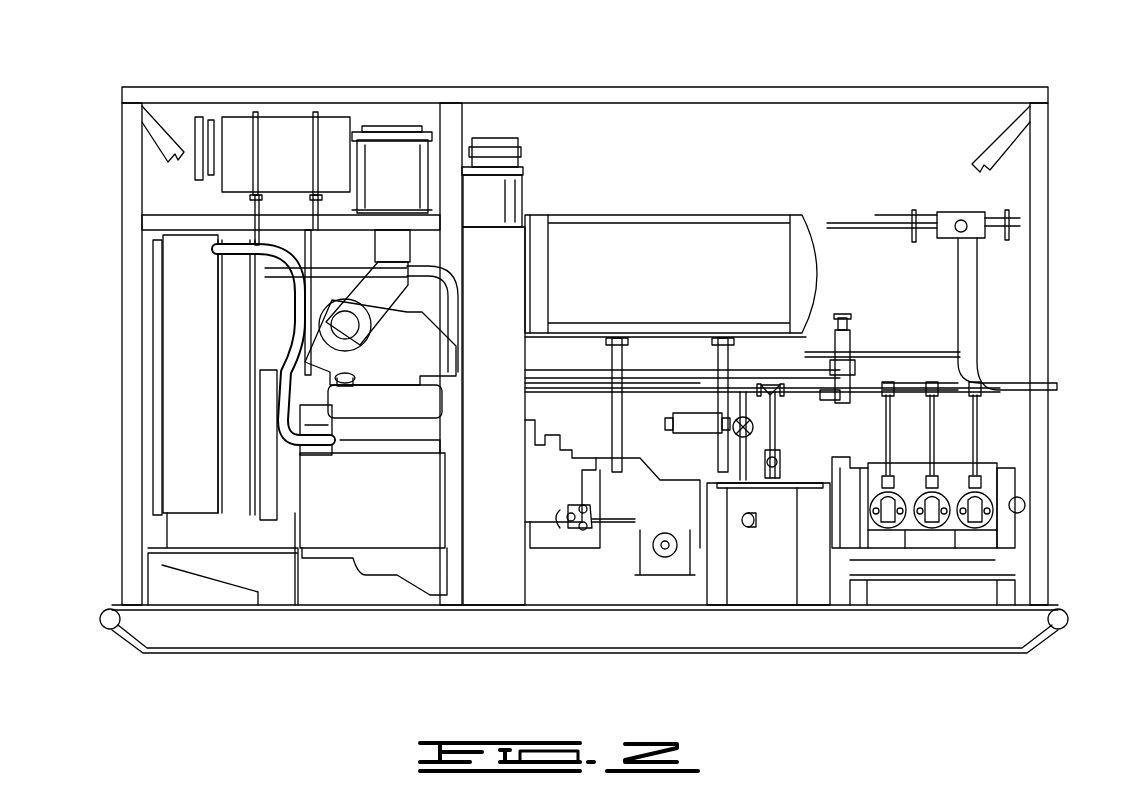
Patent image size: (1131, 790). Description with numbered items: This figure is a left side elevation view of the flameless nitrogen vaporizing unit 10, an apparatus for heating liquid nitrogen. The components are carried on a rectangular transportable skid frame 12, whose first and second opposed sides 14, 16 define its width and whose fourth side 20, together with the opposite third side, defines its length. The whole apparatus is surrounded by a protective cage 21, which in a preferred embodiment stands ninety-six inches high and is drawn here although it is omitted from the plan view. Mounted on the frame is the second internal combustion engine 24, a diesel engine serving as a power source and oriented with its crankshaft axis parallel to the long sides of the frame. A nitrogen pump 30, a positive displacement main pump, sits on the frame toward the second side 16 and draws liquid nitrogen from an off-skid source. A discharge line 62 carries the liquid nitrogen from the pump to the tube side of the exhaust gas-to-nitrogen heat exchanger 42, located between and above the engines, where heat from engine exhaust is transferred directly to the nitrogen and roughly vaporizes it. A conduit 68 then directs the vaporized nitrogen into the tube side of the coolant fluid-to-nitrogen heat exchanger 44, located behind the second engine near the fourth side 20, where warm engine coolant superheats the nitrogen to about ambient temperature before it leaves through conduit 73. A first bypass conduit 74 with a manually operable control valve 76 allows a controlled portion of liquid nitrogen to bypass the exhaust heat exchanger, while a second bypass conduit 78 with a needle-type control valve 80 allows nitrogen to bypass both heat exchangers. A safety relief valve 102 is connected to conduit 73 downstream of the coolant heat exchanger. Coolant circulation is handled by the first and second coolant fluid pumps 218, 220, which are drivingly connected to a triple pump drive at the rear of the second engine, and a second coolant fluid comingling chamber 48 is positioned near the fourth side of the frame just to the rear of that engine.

The flameless nitrogen vaporizing unit 10 is at (1062, 62).
The skid frame 12 is at (449, 634).
The first side 14 is at (100, 612).
The second side 16 is at (1070, 613).
The fourth side 20 is at (355, 637).
The protective cage 21 is at (112, 286).
The second internal combustion engine 24 is at (340, 545).
The nitrogen pump 30 is at (985, 547).
The exhaust gas-to-nitrogen heat exchanger 42 is at (237, 132).
The coolant fluid-to-nitrogen heat exchanger 44 is at (757, 590).
The second coolant fluid comingling chamber 48 is at (500, 280).
The discharge line 62 is at (310, 252).
The conduit 68 is at (263, 222).
The conduit 73 is at (745, 470).
The first bypass conduit 74 is at (823, 392).
The manually operable control valve 76 is at (846, 368).
The second bypass conduit 78 is at (905, 352).
The manually operable control valve 80 is at (978, 215).
The safety relief valve 102 is at (712, 432).
The first coolant fluid pump 218 is at (593, 514).
The second coolant fluid pump 220 is at (590, 437).